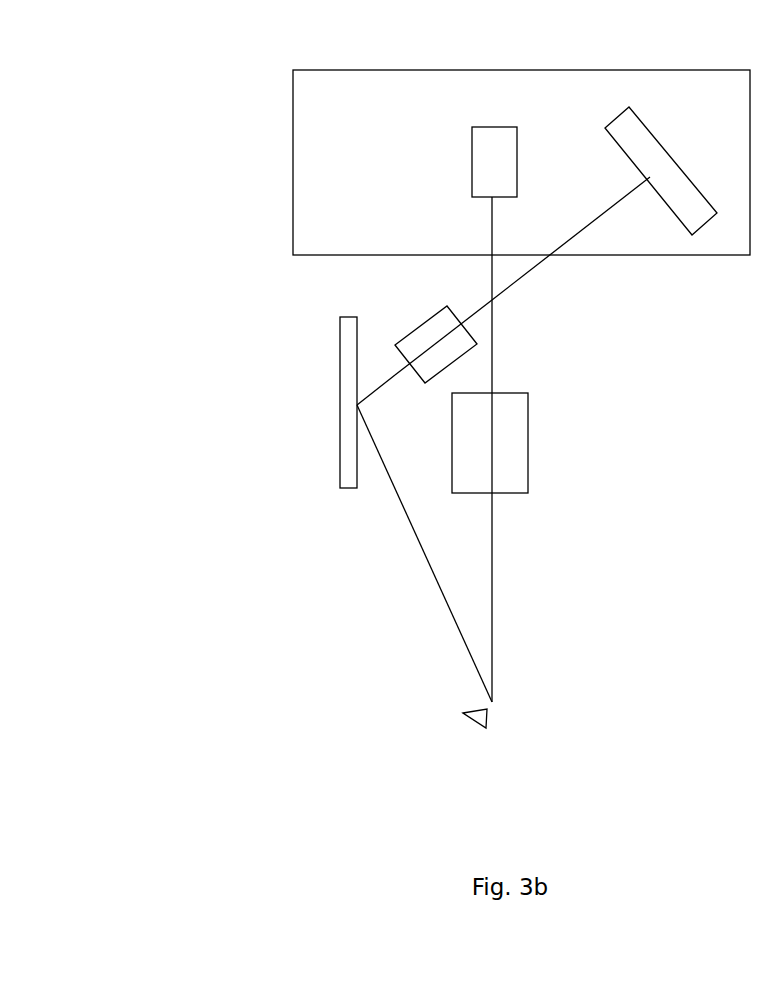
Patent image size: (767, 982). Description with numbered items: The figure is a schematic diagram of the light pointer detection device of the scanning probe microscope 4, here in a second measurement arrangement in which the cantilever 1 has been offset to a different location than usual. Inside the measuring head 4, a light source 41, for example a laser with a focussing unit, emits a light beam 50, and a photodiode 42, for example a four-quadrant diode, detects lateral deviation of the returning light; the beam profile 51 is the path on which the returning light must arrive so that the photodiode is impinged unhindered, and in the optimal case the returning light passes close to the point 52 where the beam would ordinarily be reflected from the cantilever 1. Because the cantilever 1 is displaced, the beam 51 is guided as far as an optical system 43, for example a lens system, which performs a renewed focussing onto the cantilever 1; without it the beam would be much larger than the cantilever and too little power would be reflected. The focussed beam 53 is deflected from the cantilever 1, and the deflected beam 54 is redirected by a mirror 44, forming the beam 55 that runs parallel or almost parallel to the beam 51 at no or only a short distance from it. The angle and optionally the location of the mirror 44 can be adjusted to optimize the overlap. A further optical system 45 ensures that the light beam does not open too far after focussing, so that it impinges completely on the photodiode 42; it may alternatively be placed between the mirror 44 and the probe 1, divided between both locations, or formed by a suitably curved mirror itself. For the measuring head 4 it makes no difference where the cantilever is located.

The scanning probe microscope 4 is at (345, 87).
The light source 41 is at (482, 177).
The photodiode 42 is at (633, 152).
The optical system 43 is at (515, 413).
The mirror 44 is at (347, 472).
The further optical system 45 is at (460, 348).
The emitted light beam 50 is at (491, 242).
The deflected light beam 51 is at (535, 268).
The point 52 is at (492, 300).
The beam 53 is at (492, 520).
The deflected beam 54 is at (420, 543).
The beam 55 is at (393, 370).
The cantilever 1 is at (492, 702).